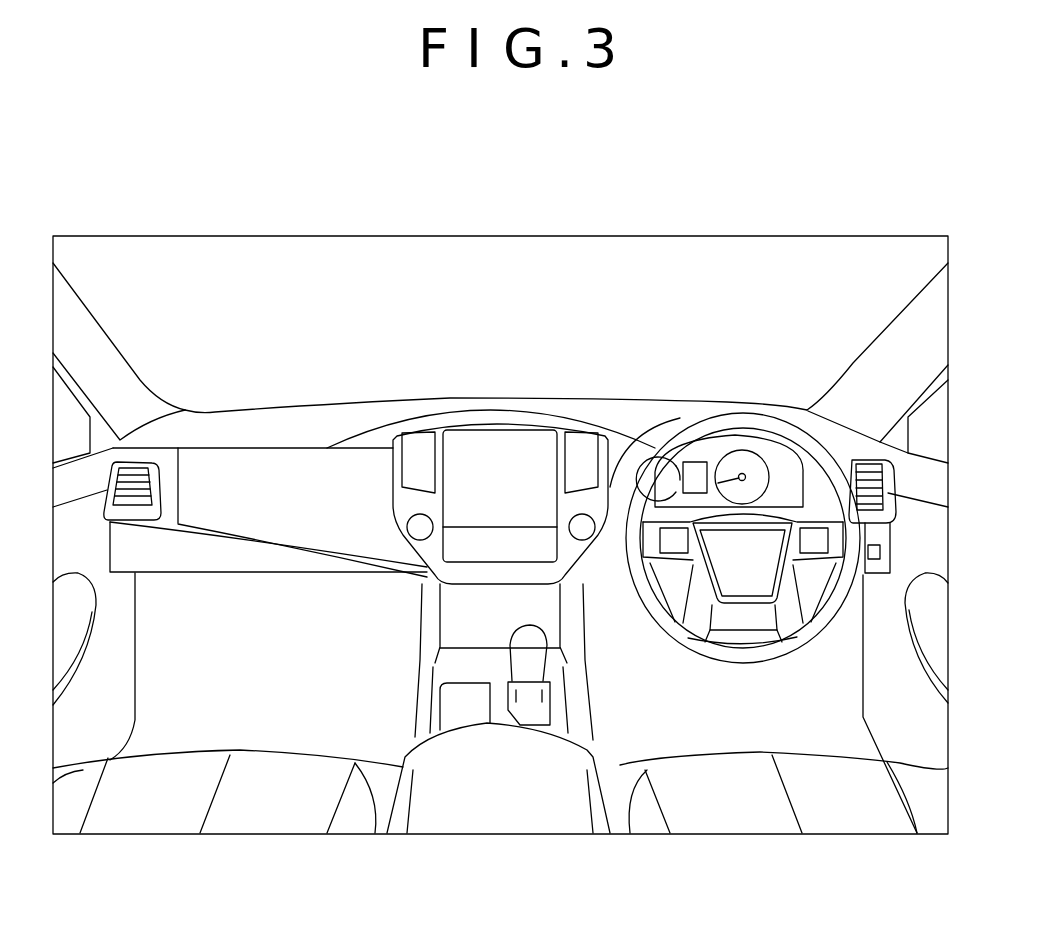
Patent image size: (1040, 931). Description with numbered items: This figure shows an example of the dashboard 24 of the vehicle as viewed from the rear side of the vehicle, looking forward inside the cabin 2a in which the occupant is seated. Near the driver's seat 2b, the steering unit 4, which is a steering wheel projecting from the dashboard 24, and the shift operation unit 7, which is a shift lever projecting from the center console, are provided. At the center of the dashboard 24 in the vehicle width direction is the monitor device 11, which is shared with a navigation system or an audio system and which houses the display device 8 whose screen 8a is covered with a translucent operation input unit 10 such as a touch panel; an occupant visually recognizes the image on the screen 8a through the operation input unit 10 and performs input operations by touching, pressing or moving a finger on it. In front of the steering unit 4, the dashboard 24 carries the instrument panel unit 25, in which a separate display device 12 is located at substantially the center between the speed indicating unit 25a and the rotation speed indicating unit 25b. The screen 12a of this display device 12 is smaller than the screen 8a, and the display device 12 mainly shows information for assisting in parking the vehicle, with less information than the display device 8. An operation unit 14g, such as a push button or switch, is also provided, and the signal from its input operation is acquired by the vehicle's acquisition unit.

The cabin 2a is at (283, 257).
The seat 2b is at (727, 815).
The dashboard 24 is at (382, 408).
The monitor device 11 is at (493, 414).
The screen 8a is at (527, 448).
The display device 8 is at (500, 353).
The operation input unit 10 is at (500, 353).
The screen 12a is at (692, 482).
The display device 12 is at (671, 310).
The instrument panel unit 25 is at (706, 317).
The speed indicating unit 25a is at (634, 463).
The rotation speed indicating unit 25b is at (742, 474).
The steering unit 4 is at (773, 430).
The shift operation unit 7 is at (530, 670).
The operation unit 14g is at (881, 552).